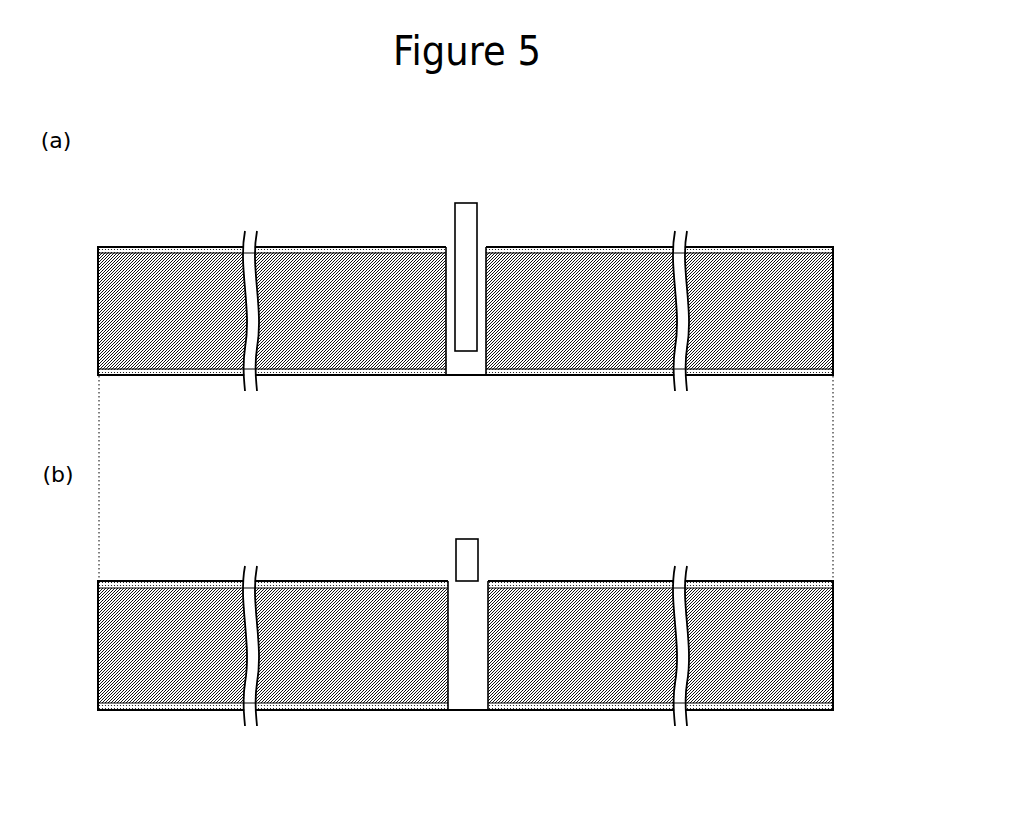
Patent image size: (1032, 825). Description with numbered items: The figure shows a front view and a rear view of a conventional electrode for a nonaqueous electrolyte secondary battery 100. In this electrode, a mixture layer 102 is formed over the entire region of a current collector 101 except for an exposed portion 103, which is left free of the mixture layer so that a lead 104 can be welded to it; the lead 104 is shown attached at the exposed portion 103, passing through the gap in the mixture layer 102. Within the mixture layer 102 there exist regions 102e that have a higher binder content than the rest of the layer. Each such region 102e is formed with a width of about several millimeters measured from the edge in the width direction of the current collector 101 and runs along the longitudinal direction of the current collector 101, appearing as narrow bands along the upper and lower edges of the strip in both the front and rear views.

The electrode for a nonaqueous electrolyte secondary battery 100 is at (790, 111).
The current collector 101 is at (790, 237).
The mixture layer 102 is at (585, 262).
The region having a higher binder content 102e is at (345, 237).
The exposed portion 103 is at (458, 352).
The lead 104 is at (458, 202).